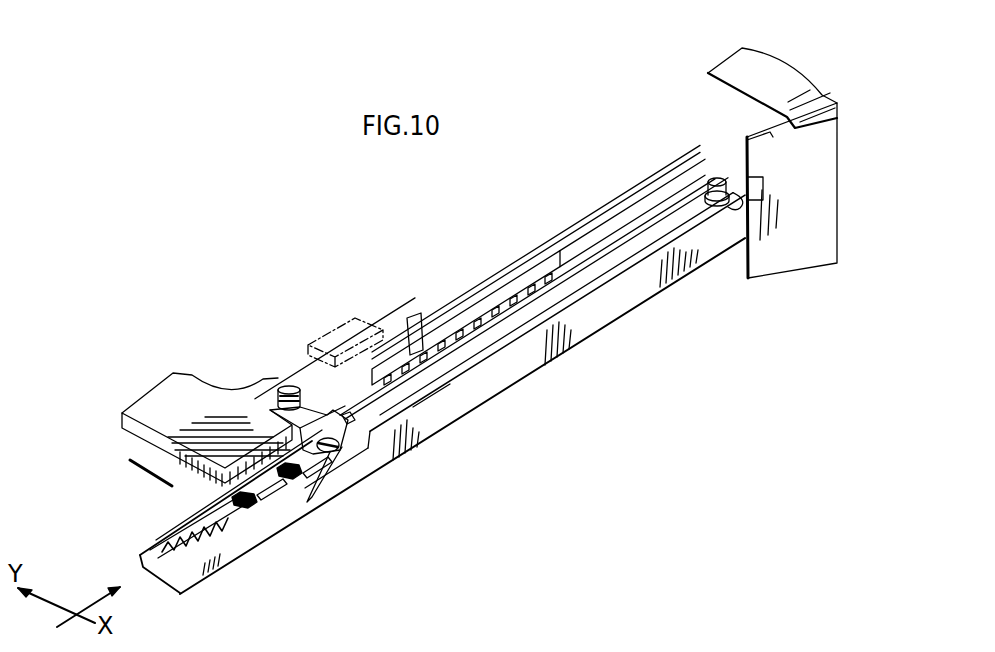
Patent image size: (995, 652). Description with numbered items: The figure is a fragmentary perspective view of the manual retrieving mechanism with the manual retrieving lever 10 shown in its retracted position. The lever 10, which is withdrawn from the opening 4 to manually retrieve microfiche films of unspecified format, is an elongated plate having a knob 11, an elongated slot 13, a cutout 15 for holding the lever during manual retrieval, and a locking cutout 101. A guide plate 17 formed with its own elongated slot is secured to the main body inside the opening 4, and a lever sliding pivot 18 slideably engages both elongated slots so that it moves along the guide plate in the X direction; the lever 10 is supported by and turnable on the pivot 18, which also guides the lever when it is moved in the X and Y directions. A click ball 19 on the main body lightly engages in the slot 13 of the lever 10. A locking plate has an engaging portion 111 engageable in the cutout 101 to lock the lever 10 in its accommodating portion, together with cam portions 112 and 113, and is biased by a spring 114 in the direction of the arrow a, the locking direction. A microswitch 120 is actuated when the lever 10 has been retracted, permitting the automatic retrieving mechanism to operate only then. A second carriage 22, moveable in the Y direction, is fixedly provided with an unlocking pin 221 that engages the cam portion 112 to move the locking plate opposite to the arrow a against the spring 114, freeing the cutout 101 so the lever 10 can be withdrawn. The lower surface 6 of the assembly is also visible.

The opening 4 is at (760, 192).
The base 6 is at (385, 452).
The manual retrieving lever 10 is at (473, 367).
The knob 11 is at (307, 473).
The elongated slot 13 is at (505, 333).
The cutout 15 is at (662, 197).
The guide plate 17 is at (620, 303).
The lever sliding pivot 18 is at (716, 178).
The click ball 19 is at (413, 407).
The second carriage 22 is at (190, 397).
The arrow a is at (277, 497).
The locking cutout 101 is at (340, 440).
The engaging portion 111 is at (343, 407).
The cam portion 112 is at (275, 408).
The cam portion 113 is at (346, 445).
The spring 114 is at (178, 535).
The microswitch 120 is at (357, 313).
The unlocking pin 221 is at (292, 388).